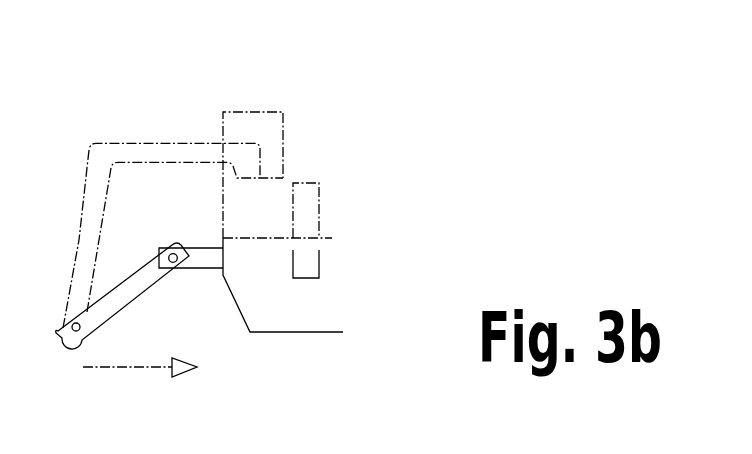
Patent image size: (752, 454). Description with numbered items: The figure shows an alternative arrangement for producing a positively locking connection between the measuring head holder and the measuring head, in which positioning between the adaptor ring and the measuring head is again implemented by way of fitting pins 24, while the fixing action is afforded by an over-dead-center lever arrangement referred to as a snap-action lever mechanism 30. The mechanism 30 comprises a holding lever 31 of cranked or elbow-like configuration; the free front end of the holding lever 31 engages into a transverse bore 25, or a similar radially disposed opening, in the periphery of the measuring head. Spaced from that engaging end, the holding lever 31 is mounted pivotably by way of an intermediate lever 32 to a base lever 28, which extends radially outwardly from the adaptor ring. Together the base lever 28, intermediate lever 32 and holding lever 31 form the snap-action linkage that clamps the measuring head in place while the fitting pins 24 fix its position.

The snap-action lever mechanism 30 is at (87, 86).
The holding lever 31 is at (147, 148).
The transverse bore 25 is at (245, 118).
The fitting pins 24 is at (312, 200).
The base lever 28 is at (207, 254).
The intermediate lever 32 is at (115, 297).